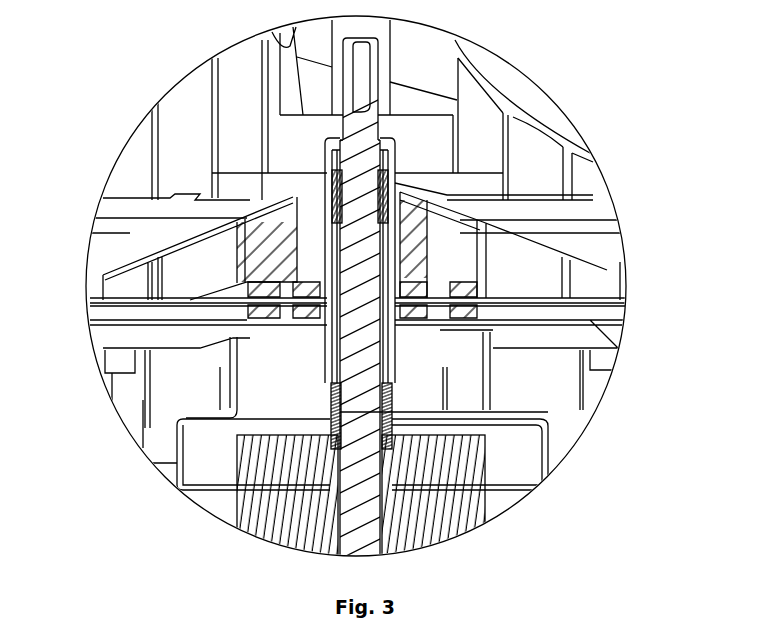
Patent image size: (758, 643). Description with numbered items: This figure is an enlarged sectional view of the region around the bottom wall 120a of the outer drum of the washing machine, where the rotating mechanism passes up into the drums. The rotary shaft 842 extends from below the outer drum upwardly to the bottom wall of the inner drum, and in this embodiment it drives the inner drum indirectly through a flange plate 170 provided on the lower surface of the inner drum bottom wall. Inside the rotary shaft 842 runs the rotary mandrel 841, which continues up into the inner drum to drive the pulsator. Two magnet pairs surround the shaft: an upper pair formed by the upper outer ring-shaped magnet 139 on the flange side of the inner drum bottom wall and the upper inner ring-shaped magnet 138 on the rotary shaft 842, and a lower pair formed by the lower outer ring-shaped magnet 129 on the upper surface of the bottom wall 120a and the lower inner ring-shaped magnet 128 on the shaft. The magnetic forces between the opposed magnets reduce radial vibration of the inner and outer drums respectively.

The rotary mandrel 841 is at (358, 124).
The rotary shaft 842 is at (328, 336).
The upper inner ring-shaped magnet 138 is at (398, 277).
The upper outer ring-shaped magnet 139 is at (500, 290).
The lower outer ring-shaped magnet 129 is at (450, 321).
The lower inner ring-shaped magnet 128 is at (438, 327).
The flange plate 170 is at (125, 262).
The bottom wall of the outer drum 120a is at (140, 326).